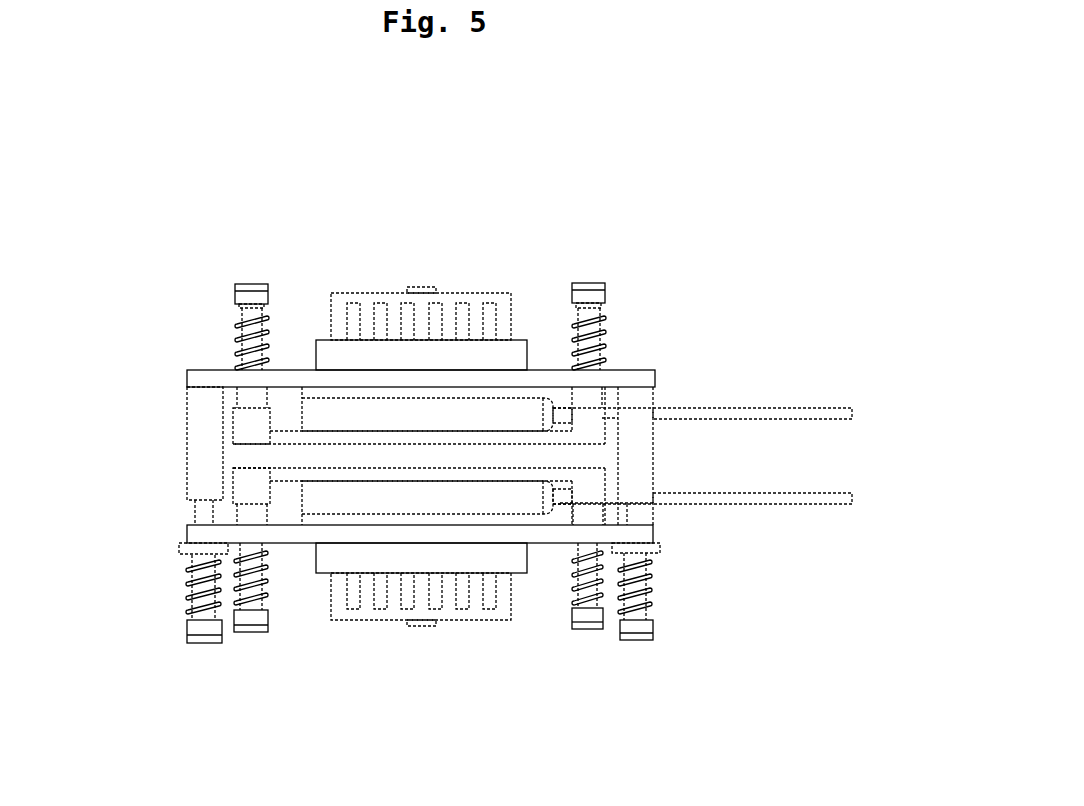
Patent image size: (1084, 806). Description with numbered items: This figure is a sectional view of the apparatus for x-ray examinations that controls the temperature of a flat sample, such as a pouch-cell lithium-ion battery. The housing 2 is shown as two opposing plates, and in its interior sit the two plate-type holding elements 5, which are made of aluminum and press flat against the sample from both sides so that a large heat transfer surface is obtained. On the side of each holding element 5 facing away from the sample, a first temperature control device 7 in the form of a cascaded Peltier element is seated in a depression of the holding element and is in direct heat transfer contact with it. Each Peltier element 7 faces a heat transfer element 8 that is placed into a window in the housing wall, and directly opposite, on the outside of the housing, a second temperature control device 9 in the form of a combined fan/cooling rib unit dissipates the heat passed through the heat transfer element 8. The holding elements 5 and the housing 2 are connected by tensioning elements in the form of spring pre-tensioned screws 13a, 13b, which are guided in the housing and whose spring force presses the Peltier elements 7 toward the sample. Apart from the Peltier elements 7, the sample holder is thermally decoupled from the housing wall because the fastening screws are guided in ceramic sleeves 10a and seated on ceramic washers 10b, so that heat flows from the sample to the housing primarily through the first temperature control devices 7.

The housing 2 is at (208, 373).
The plate-type holding element 5 is at (595, 430).
The first temperature control device 7 is at (517, 407).
The heat transfer element 8 is at (338, 357).
The second temperature control device 9 is at (422, 288).
The ceramic sleeve 10a is at (203, 463).
The ceramic washer 10b is at (183, 552).
The spring pre-tensioned screw 13a is at (240, 323).
The spring pre-tensioned screw 13b is at (188, 617).